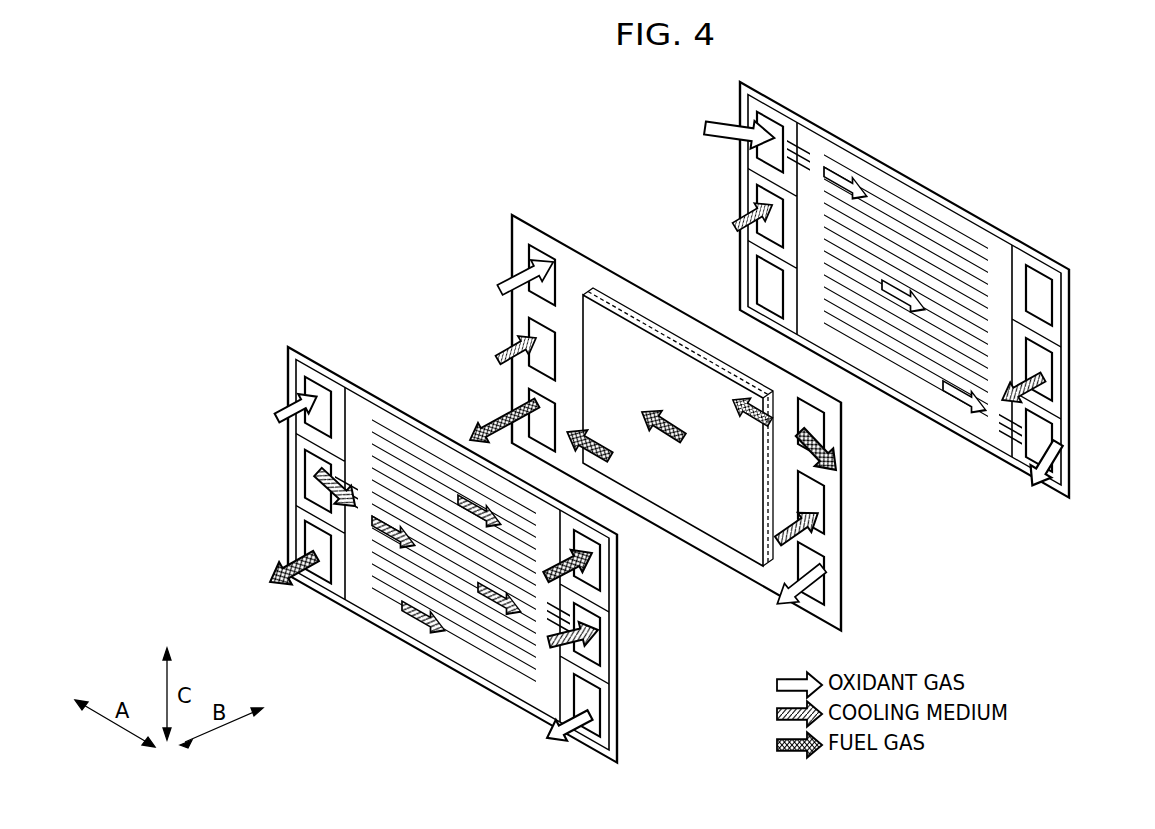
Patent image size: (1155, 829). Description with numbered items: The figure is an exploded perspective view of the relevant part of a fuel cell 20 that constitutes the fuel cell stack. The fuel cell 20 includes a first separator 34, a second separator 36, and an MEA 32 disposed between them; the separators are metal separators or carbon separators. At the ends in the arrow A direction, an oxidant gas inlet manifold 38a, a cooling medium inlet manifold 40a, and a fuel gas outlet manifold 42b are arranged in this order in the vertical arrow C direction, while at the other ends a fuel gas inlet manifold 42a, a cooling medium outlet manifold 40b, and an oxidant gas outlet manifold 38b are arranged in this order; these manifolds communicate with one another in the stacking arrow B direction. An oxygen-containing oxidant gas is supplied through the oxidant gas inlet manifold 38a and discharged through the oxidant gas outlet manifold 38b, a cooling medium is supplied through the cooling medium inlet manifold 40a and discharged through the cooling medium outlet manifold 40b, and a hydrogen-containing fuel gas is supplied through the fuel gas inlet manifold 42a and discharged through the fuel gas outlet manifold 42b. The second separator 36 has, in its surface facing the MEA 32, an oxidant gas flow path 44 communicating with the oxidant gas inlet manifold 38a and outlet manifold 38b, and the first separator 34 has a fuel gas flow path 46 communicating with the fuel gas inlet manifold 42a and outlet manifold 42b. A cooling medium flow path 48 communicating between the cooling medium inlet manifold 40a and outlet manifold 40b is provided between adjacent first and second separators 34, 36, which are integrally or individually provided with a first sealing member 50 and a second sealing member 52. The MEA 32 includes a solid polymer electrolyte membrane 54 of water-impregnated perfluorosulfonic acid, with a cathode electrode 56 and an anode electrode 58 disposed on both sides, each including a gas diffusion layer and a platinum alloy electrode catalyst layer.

The fuel cell 20 is at (601, 75).
The MEA 32 is at (509, 220).
The first separator 34 is at (286, 350).
The second separator 36 is at (737, 94).
The oxidant gas inlet manifold 38a is at (309, 388).
The oxidant gas outlet manifold 38b is at (592, 705).
The cooling medium inlet manifold 40a is at (309, 462).
The cooling medium outlet manifold 40b is at (592, 645).
The fuel gas inlet manifold 42a is at (593, 574).
The fuel gas outlet manifold 42b is at (309, 534).
The oxidant gas flow path 44 is at (932, 378).
The fuel gas flow path 46 is at (470, 612).
The cooling medium flow path 48 is at (393, 598).
The first sealing member 50 is at (360, 397).
The second sealing member 52 is at (917, 192).
The solid polymer electrolyte membrane 54 is at (587, 273).
The cathode electrode 56 is at (650, 315).
The anode electrode 58 is at (620, 328).